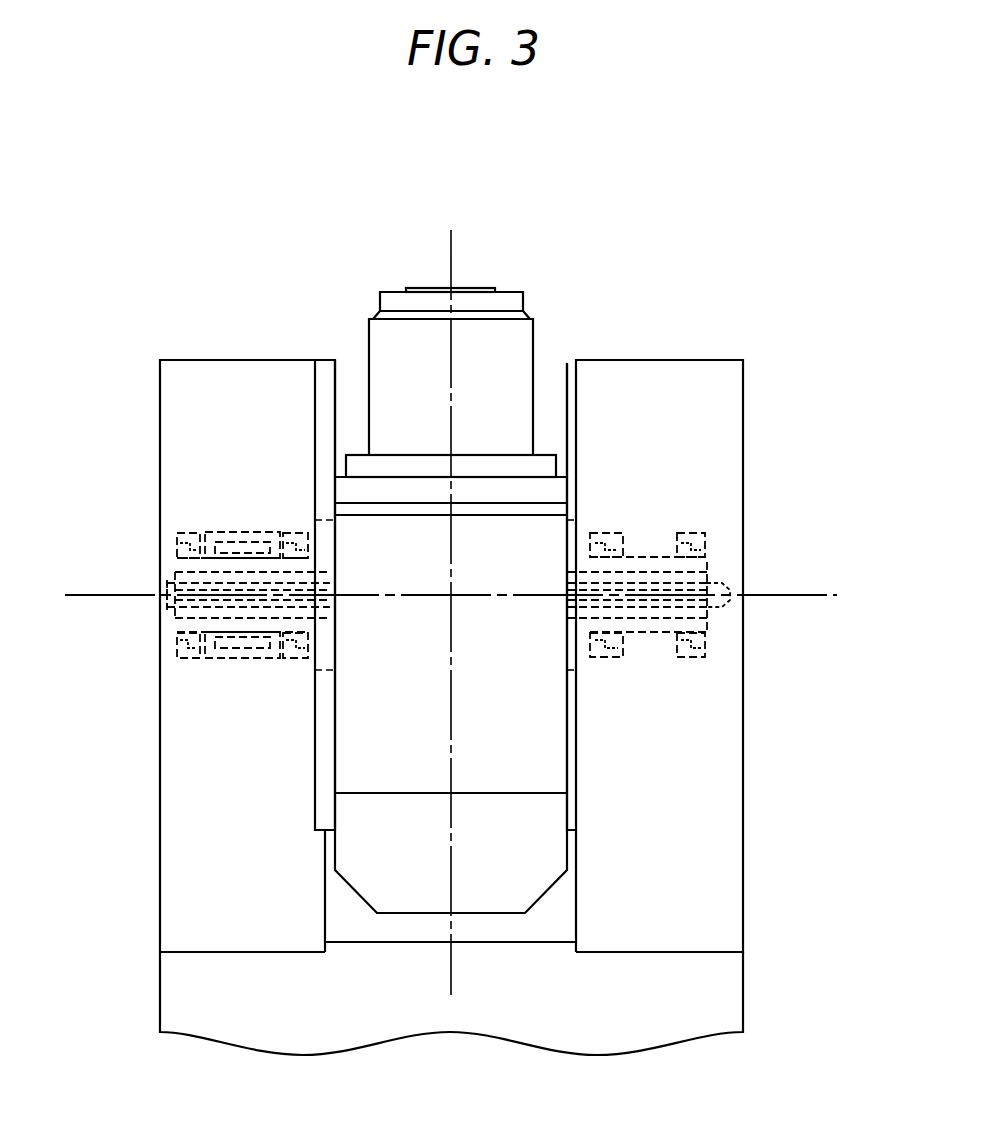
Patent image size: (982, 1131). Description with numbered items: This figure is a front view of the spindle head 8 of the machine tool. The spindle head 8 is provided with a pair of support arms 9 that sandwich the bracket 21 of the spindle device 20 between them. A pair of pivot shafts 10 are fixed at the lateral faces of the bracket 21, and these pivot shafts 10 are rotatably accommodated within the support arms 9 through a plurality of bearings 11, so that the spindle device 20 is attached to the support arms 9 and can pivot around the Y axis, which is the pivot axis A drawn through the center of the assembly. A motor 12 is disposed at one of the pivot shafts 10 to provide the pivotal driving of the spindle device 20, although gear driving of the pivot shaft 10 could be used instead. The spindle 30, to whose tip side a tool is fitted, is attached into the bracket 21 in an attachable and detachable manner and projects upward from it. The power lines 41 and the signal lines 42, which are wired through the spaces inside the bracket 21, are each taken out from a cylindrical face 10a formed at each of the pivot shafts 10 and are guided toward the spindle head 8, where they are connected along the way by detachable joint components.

The spindle head 8 is at (744, 972).
The support arm 9 is at (720, 773).
The pivot shaft 10 is at (175, 577).
The cylindrical face 10a is at (637, 580).
The bearing 11 is at (297, 660).
The motor 12 is at (243, 531).
The spindle device 20 is at (548, 571).
The bracket 21 is at (530, 760).
The spindle 30 is at (385, 340).
The power line 41 is at (719, 582).
The signal line 42 is at (218, 605).
The pivot axis A is at (810, 595).